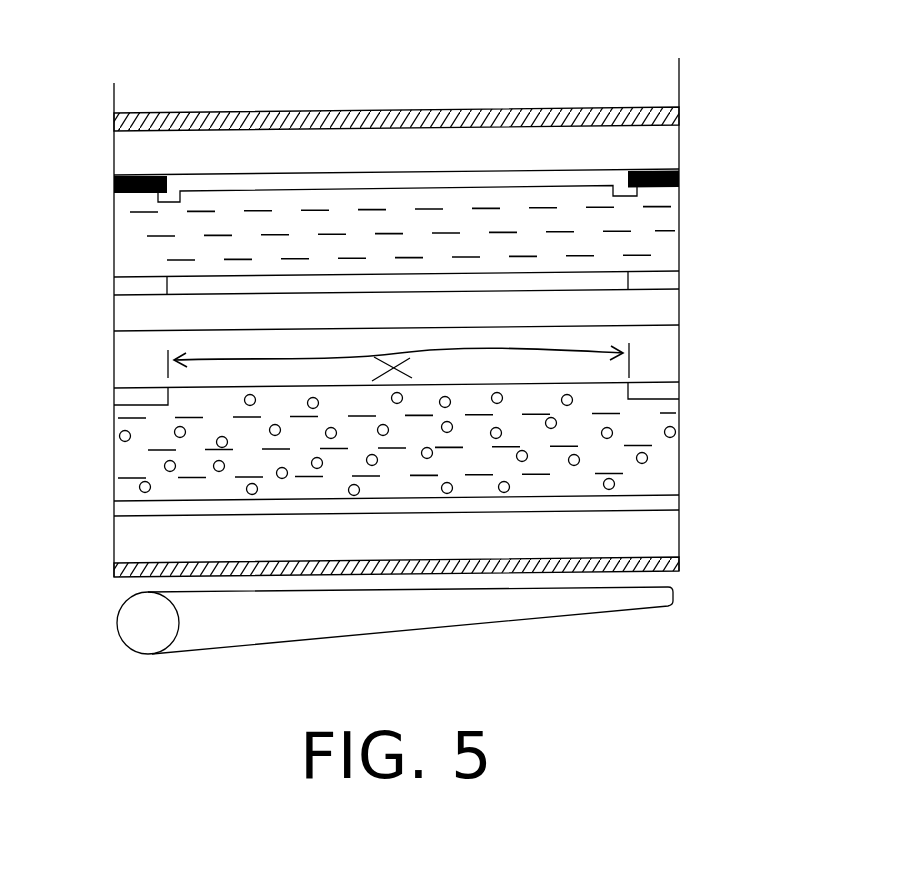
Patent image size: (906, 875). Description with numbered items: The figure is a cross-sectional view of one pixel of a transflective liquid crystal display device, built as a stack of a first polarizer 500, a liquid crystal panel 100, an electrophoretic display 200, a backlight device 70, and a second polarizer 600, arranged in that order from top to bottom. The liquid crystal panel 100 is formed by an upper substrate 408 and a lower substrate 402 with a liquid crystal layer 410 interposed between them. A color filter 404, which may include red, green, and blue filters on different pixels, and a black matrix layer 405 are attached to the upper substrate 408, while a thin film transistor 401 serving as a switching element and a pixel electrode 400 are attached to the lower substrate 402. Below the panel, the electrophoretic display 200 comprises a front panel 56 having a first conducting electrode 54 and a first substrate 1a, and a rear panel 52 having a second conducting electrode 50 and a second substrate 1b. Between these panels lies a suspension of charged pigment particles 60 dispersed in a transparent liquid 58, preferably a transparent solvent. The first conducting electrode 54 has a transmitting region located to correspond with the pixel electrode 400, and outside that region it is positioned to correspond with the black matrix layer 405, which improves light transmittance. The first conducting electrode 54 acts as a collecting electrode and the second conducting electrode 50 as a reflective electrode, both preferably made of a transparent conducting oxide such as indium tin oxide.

The liquid crystal panel 100 is at (107, 180).
The electrophoretic display 200 is at (98, 352).
The first polarizer 500 is at (679, 106).
The upper substrate 408 is at (667, 142).
The black matrix layer 405 is at (679, 177).
The color filter 404 is at (293, 183).
The liquid crystal layer 410 is at (679, 215).
The thin film transistor 401 is at (679, 280).
The pixel electrode 400 is at (487, 283).
The lower substrate 402 is at (679, 305).
The first substrate 1a is at (660, 350).
The front panel 56 is at (692, 342).
The first conducting electrode 54 is at (672, 388).
The transparent liquid 58 is at (680, 438).
The charged pigment particles 60 is at (648, 458).
The second conducting electrode 50 is at (670, 502).
The rear panel 52 is at (692, 502).
The second substrate 1b is at (395, 537).
The second polarizer 600 is at (679, 565).
The backlight device 70 is at (98, 593).